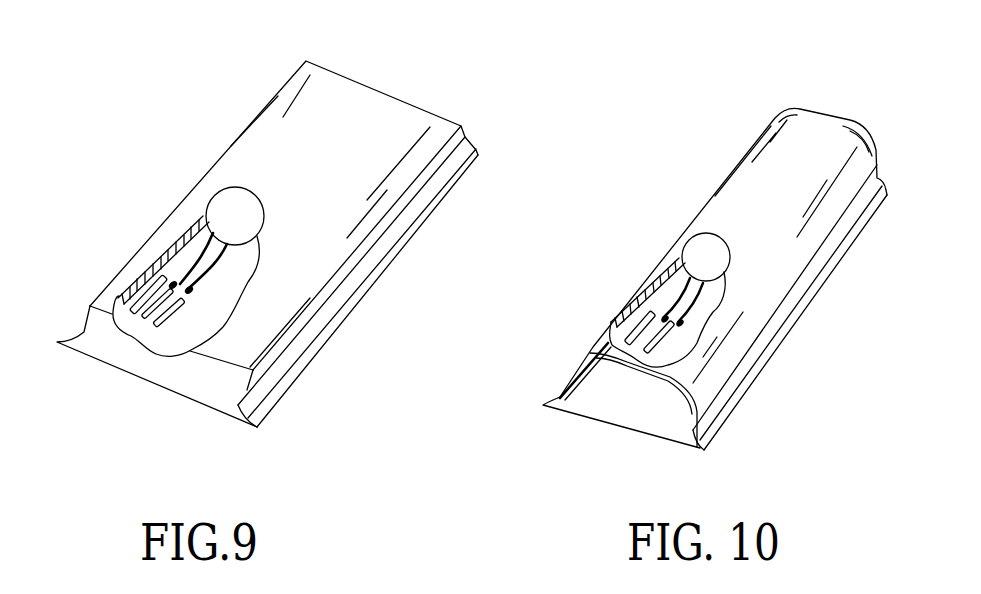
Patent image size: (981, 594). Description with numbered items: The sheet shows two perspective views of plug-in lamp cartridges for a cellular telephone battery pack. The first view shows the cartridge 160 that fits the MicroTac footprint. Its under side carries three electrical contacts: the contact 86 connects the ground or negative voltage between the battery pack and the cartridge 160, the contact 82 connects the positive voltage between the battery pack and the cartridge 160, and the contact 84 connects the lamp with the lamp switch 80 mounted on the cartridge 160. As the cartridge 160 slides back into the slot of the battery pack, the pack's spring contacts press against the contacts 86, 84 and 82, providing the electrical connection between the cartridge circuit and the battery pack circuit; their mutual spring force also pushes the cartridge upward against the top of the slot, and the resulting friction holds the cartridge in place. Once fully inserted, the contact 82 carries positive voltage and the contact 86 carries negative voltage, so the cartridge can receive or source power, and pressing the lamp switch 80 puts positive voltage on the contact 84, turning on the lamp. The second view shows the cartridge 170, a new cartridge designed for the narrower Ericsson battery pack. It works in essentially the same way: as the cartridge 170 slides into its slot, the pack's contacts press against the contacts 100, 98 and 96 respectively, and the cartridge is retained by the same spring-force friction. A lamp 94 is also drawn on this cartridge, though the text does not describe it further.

In FIG. 9, the cartridge 160 is at (332, 128).
In FIG. 9, the lamp switch 80 is at (221, 192).
In FIG. 9, the contact 82 is at (160, 292).
In FIG. 9, the contact 84 is at (150, 300).
In FIG. 9, the contact 86 is at (148, 275).
In FIG. 10, the cartridge 170 is at (788, 155).
In FIG. 10, the lamp 94 is at (689, 242).
In FIG. 10, the contact 96 is at (650, 353).
In FIG. 10, the contact 98 is at (605, 345).
In FIG. 10, the contact 100 is at (650, 312).